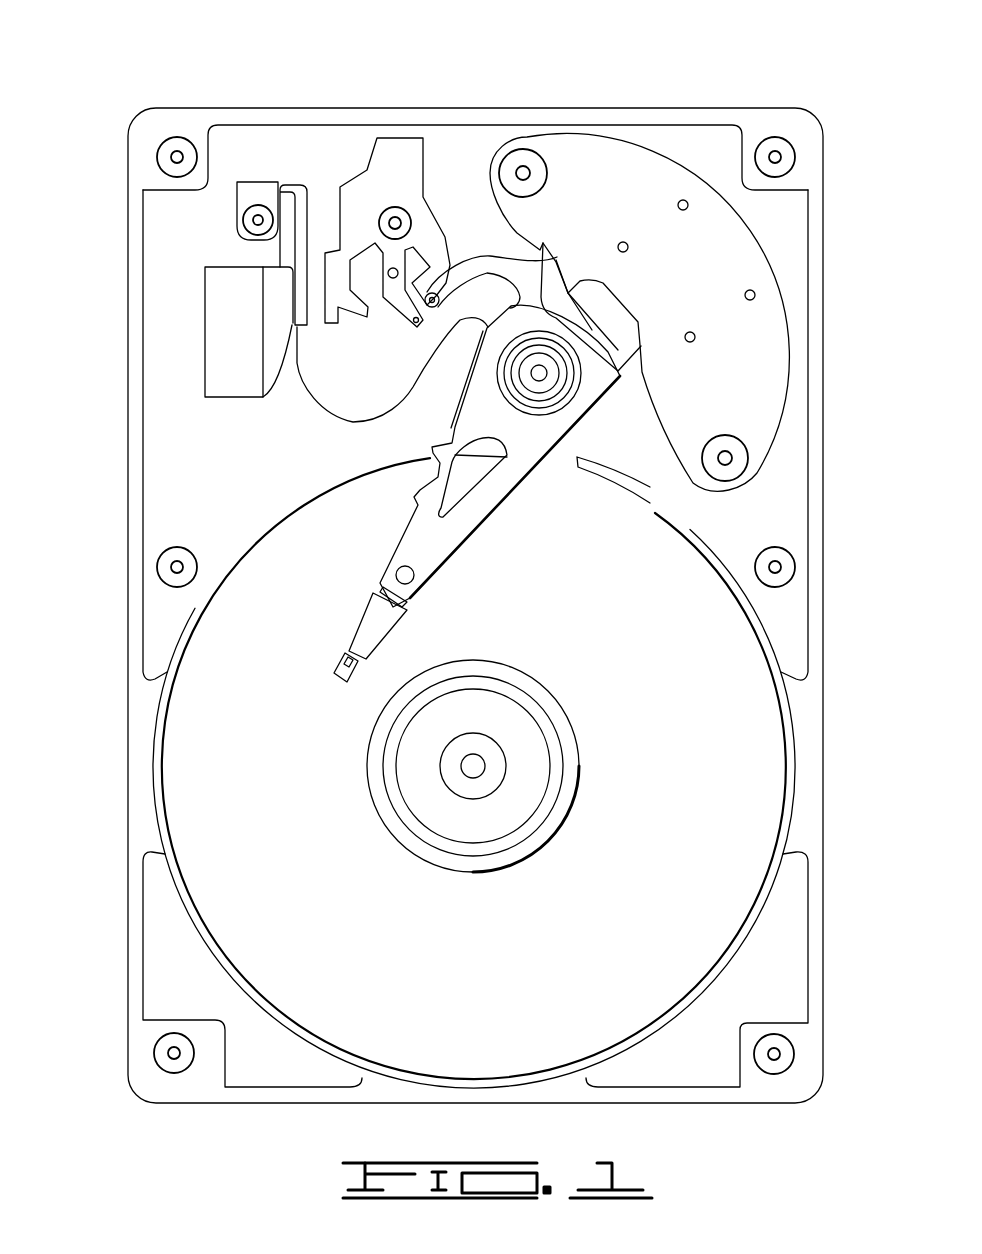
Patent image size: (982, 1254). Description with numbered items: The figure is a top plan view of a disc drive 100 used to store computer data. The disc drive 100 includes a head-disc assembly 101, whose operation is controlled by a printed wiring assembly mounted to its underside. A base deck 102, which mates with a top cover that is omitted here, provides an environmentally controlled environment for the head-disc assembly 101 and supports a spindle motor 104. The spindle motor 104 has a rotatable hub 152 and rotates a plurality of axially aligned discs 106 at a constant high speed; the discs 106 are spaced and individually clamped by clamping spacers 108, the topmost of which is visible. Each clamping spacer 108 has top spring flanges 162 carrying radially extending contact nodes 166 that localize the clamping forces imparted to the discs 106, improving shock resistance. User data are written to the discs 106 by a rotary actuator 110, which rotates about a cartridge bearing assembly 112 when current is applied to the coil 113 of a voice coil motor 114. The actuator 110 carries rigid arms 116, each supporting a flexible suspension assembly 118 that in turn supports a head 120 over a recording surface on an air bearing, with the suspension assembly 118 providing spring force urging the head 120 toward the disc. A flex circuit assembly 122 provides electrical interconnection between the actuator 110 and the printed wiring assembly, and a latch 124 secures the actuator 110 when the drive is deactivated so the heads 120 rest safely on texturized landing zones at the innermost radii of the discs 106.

The disc drive 100 is at (243, 88).
The head-disc assembly 101 is at (148, 167).
The base deck 102 is at (222, 464).
The spindle motor 104 is at (486, 795).
The discs 106 is at (715, 850).
The clamping spacers 108 is at (378, 807).
The rotary actuator 110 is at (514, 449).
The cartridge bearing assembly 112 is at (541, 375).
The coil 113 is at (637, 323).
The voice coil motor 114 is at (575, 208).
The rigid arms 116 is at (413, 553).
The flexible suspension assembly 118 is at (363, 633).
The head 120 is at (337, 667).
The flex circuit assembly 122 is at (340, 432).
The latch 124 is at (397, 165).
The rotatable hub 152 is at (515, 722).
The top spring flanges 162 is at (573, 772).
The contact nodes 166 is at (558, 730).